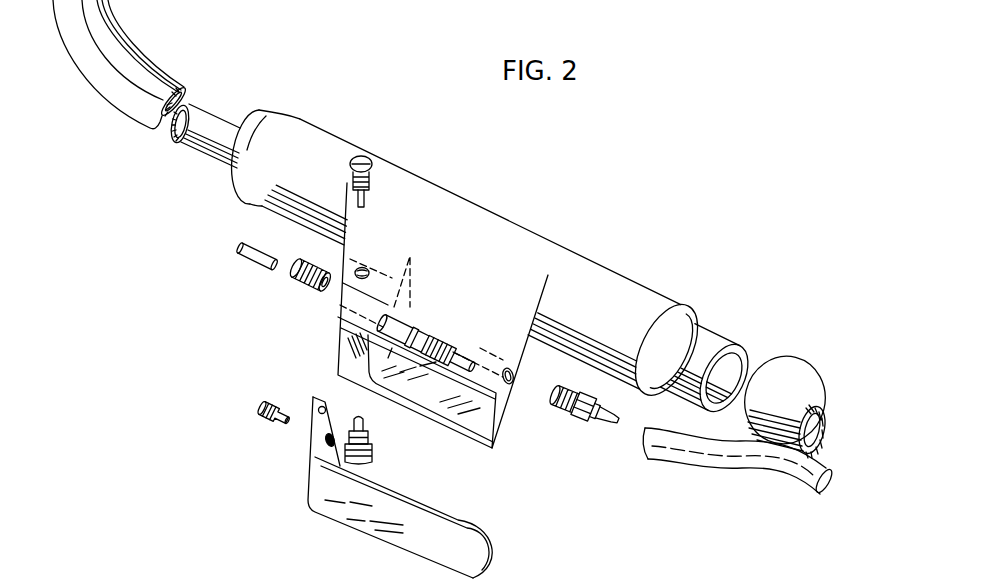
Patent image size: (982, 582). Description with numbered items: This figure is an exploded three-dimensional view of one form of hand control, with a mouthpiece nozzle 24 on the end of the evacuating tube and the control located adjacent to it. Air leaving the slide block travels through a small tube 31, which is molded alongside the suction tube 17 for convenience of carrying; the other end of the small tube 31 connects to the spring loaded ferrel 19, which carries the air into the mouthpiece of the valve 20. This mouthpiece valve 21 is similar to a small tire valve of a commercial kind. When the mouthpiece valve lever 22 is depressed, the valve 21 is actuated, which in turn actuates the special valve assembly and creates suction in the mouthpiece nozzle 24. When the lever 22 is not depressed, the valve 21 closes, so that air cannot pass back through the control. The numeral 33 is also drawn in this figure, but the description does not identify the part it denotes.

The suction tube 17 is at (773, 388).
The spring loaded ferrel 19 is at (602, 425).
The valve 20 is at (483, 223).
The mouthpiece valve 21 is at (444, 335).
The mouthpiece valve lever 22 is at (457, 540).
The mouthpiece nozzle 24 is at (128, 113).
The small tube 31 is at (770, 470).
The bracket 33 is at (249, 577).